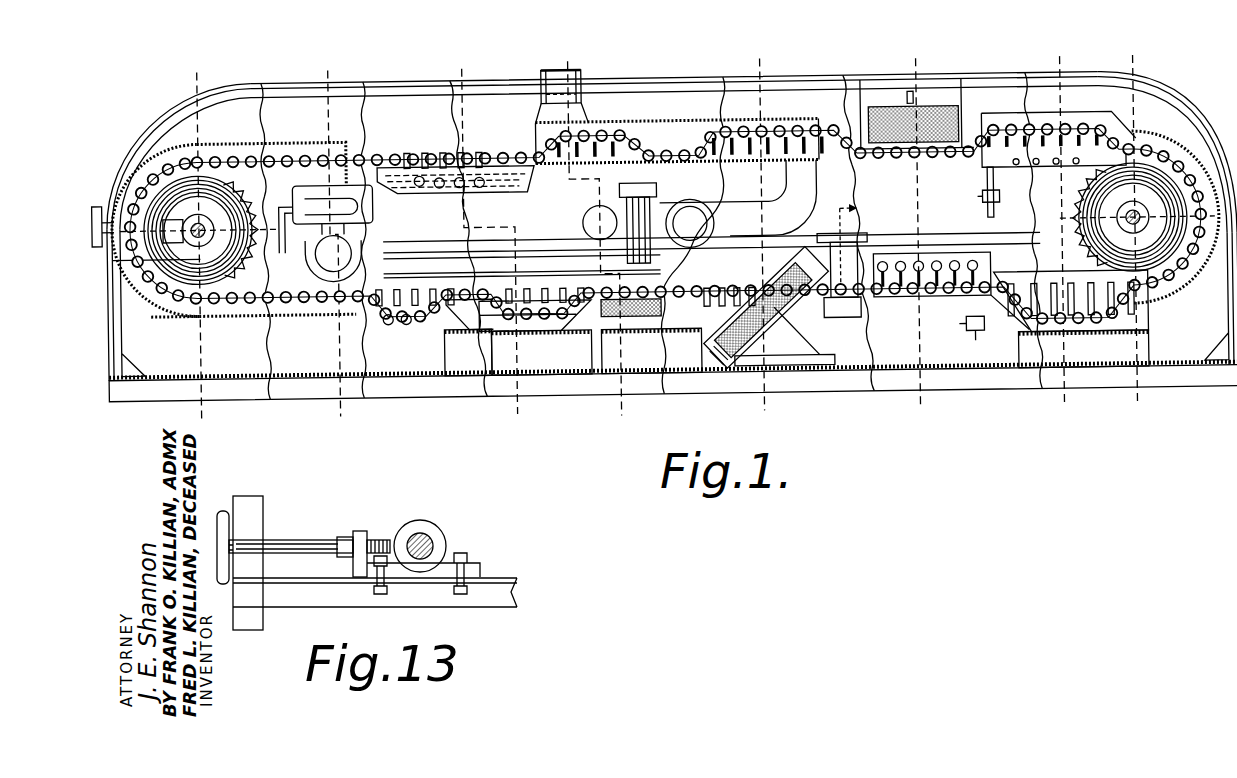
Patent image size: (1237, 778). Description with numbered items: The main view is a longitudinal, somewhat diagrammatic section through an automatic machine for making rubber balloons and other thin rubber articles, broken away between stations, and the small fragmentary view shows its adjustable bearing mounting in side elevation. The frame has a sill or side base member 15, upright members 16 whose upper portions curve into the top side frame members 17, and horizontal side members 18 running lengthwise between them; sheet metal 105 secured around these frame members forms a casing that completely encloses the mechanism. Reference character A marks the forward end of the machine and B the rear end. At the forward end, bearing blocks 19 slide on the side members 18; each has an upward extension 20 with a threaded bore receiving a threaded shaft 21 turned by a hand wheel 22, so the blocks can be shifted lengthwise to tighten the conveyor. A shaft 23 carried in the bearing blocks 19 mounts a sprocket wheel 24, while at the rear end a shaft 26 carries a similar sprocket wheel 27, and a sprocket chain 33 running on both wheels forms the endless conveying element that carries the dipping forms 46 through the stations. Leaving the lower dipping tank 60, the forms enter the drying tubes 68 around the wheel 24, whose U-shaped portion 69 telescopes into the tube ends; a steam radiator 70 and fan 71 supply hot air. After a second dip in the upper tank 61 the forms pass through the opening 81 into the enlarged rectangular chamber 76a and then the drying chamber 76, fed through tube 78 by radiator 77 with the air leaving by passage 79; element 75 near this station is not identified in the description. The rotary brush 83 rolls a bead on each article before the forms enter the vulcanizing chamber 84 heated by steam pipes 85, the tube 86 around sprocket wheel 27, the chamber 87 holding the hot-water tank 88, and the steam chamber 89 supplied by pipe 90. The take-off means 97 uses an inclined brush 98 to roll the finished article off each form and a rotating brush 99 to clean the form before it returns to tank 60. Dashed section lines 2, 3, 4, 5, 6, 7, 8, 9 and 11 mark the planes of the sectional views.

In FIG. 1, the section line 2 is at (198, 243).
In FIG. 1, the section line 3 is at (332, 240).
In FIG. 1, the section line 4 is at (487, 240).
In FIG. 1, the section line 5 is at (592, 237).
In FIG. 1, the section line 6 is at (763, 235).
In FIG. 1, the section line 7 is at (918, 235).
In FIG. 1, the section line 8 is at (1062, 234).
In FIG. 1, the section line 9 is at (1135, 234).
In FIG. 1, the flow path 11 is at (843, 350).
In FIG. 1, the sill or side base member 15 is at (232, 396).
In FIG. 1, the upright members 16 is at (121, 334).
In FIG. 1, the top side frame members 17 is at (280, 78).
In FIG. 1, the horizontal side members 18 is at (551, 240).
In FIG. 13, the horizontal side members 18 is at (500, 598).
In FIG. 13, the bearing blocks 19 is at (447, 545).
In FIG. 13, the upward extension 20 is at (366, 529).
In FIG. 13, the threaded shaft 21 is at (297, 540).
In FIG. 1, the hand wheel 22 is at (96, 199).
In FIG. 13, the hand wheel 22 is at (227, 512).
In FIG. 1, the shaft 23 is at (192, 231).
In FIG. 13, the shaft 23 is at (419, 533).
In FIG. 1, the sprocket wheel 24 is at (236, 241).
In FIG. 1, the shaft 26 is at (1120, 221).
In FIG. 1, the sprocket wheel 27 is at (1076, 202).
In FIG. 1, the sprocket chain 33 is at (392, 152).
In FIG. 1, the dipping form 46 is at (335, 150).
In FIG. 1, the dipping tank 60 is at (590, 315).
In FIG. 1, the dipping tank 61 is at (440, 198).
In FIG. 1, the drying tubes 68 is at (290, 137).
In FIG. 1, the U-shaped portion of the tubes 69 is at (223, 136).
In FIG. 1, the radiator 70 is at (301, 190).
In FIG. 1, the fan 71 is at (313, 264).
In FIG. 1, the tray wall 75 is at (537, 148).
In FIG. 1, the drying chamber 76 is at (641, 120).
In FIG. 1, the enlarged rectangular chamber 76a is at (541, 86).
In FIG. 1, the radiator 77 is at (614, 201).
In FIG. 1, the tube 78 is at (817, 192).
In FIG. 1, the passage 79 is at (583, 76).
In FIG. 1, the opening 81 is at (541, 147).
In FIG. 1, the bead rolling element 83 is at (937, 115).
In FIG. 1, the vulcanizing chamber 84 is at (1003, 120).
In FIG. 1, the steam pipes 85 is at (988, 179).
In FIG. 1, the tube or chamber 86 is at (1185, 160).
In FIG. 1, the chamber 87 is at (1025, 278).
In FIG. 1, the tank 88 is at (1143, 326).
In FIG. 1, the steam chamber 89 is at (945, 257).
In FIG. 1, the pipe 90 is at (840, 240).
In FIG. 1, the take-off means 97 is at (800, 352).
In FIG. 1, the inclined brush 98 is at (800, 277).
In FIG. 1, the rotating brush 99 is at (641, 320).
In FIG. 1, the sheet metal 105 is at (167, 102).
In FIG. 1, the forward end of the machine A is at (122, 143).
In FIG. 1, the rear end of the machine B is at (1193, 114).